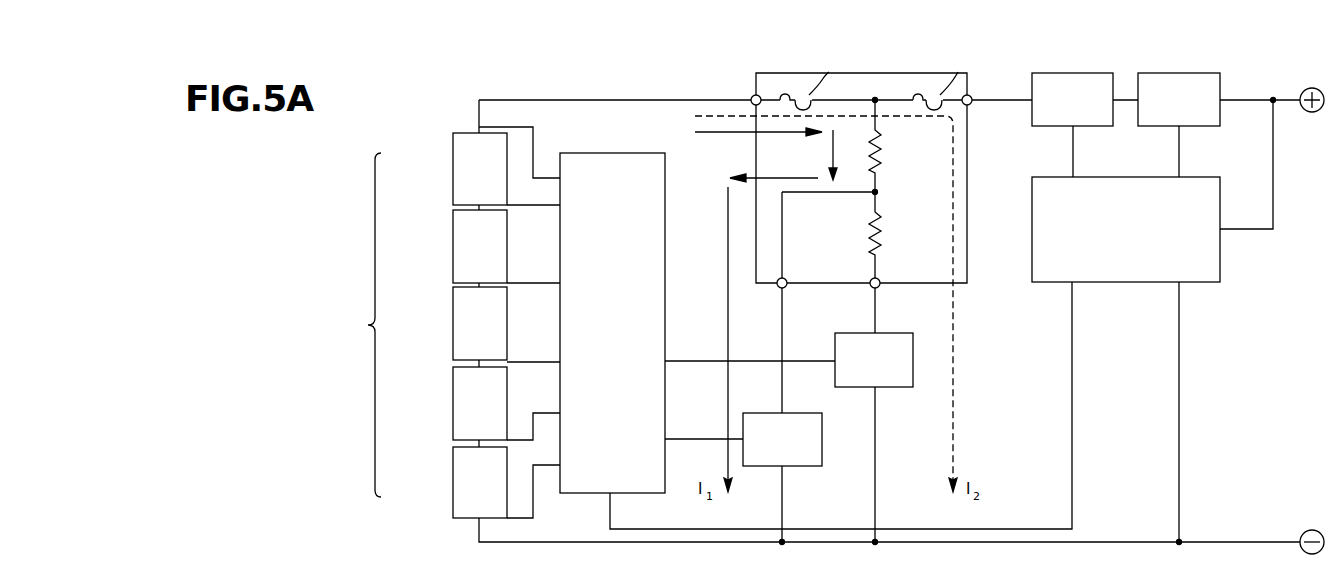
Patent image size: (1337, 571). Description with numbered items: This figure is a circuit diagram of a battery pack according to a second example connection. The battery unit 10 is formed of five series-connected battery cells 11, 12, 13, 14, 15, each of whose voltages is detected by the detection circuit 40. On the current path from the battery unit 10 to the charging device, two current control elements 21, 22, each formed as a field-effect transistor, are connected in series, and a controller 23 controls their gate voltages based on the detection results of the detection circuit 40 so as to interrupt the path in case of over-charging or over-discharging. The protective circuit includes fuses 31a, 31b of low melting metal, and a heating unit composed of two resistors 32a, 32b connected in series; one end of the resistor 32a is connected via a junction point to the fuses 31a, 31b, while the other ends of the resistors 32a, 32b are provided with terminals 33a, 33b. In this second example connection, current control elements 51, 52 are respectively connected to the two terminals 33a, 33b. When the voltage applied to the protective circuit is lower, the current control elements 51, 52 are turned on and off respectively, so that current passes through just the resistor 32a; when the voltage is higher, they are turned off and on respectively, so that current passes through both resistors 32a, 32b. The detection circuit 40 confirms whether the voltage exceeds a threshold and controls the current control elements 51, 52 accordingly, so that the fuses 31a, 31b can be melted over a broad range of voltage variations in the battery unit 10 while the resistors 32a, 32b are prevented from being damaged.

The battery unit 10 is at (416, 325).
The battery cell 11 is at (453, 172).
The battery cell 12 is at (453, 247).
The battery cell 13 is at (453, 325).
The battery cell 14 is at (453, 400).
The battery cell 15 is at (453, 480).
The current control element 21 is at (1069, 73).
The current control element 22 is at (1177, 73).
The controller 23 is at (1220, 268).
The fuse 31a is at (958, 72).
The fuse 31b is at (829, 72).
The resistor 32a is at (880, 157).
The resistor 32b is at (880, 238).
The terminal 33a is at (786, 279).
The terminal 33b is at (879, 288).
The detection circuit 40 is at (612, 153).
The current control element 51 is at (822, 452).
The current control element 52 is at (883, 387).